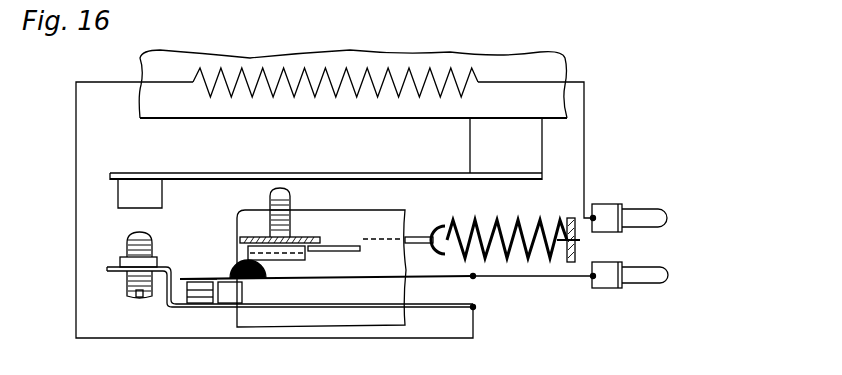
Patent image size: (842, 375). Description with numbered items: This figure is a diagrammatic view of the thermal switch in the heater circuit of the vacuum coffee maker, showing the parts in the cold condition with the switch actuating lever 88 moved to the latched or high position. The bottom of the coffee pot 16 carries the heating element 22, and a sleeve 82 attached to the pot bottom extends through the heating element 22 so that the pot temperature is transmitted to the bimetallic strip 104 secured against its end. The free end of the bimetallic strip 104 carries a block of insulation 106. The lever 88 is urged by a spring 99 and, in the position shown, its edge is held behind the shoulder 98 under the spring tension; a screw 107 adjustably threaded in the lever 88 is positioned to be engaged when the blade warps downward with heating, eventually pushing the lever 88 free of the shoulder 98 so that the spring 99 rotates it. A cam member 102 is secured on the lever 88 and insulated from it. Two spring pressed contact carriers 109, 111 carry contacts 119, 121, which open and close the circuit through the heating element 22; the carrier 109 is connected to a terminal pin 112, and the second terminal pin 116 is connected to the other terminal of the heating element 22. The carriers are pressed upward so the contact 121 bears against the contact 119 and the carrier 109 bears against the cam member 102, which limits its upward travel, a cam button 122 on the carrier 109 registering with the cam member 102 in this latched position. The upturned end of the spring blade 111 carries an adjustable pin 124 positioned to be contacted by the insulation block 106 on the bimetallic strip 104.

The heating or coffee pot 16 is at (281, 119).
The heating element 22 is at (356, 92).
The sleeve 82 is at (478, 146).
The bimetallic strip 104 is at (204, 174).
The block of insulation 106 is at (133, 195).
The screw 107 is at (290, 191).
The shoulder 98 is at (322, 238).
The spring 99 is at (445, 224).
The switch actuating lever 88 is at (320, 252).
The cam member 102 is at (237, 240).
The cam button 122 is at (240, 264).
The adjustable pin 124 is at (130, 236).
The contact 119 is at (195, 285).
The contact carrier 109 is at (306, 278).
The contact 121 is at (192, 303).
The contact carrier 111 is at (231, 309).
The terminal pin 116 is at (650, 222).
The terminal pin 112 is at (650, 283).